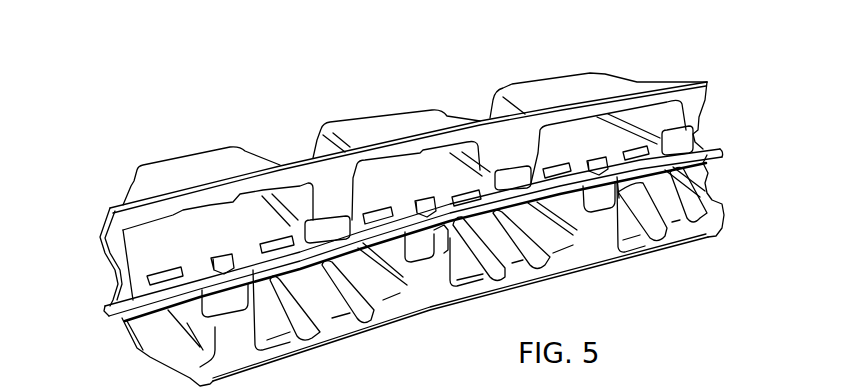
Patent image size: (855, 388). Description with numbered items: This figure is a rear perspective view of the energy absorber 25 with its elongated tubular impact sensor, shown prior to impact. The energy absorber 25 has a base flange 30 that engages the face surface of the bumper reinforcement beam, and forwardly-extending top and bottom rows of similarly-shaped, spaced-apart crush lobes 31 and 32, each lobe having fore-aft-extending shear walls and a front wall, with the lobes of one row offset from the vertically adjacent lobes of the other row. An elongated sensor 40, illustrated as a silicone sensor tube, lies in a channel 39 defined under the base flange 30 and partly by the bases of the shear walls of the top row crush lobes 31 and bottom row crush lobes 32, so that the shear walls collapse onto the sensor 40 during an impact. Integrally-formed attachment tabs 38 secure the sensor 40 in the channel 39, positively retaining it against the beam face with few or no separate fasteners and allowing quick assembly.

The energy absorber 25 is at (77, 182).
The base flange 30 is at (298, 162).
The top row crush lobes 31 is at (553, 90).
The bottom row crush lobes 32 is at (712, 206).
The attachment tabs 38 is at (222, 257).
The channel 39 is at (423, 250).
The elongated sensor 40 is at (707, 148).